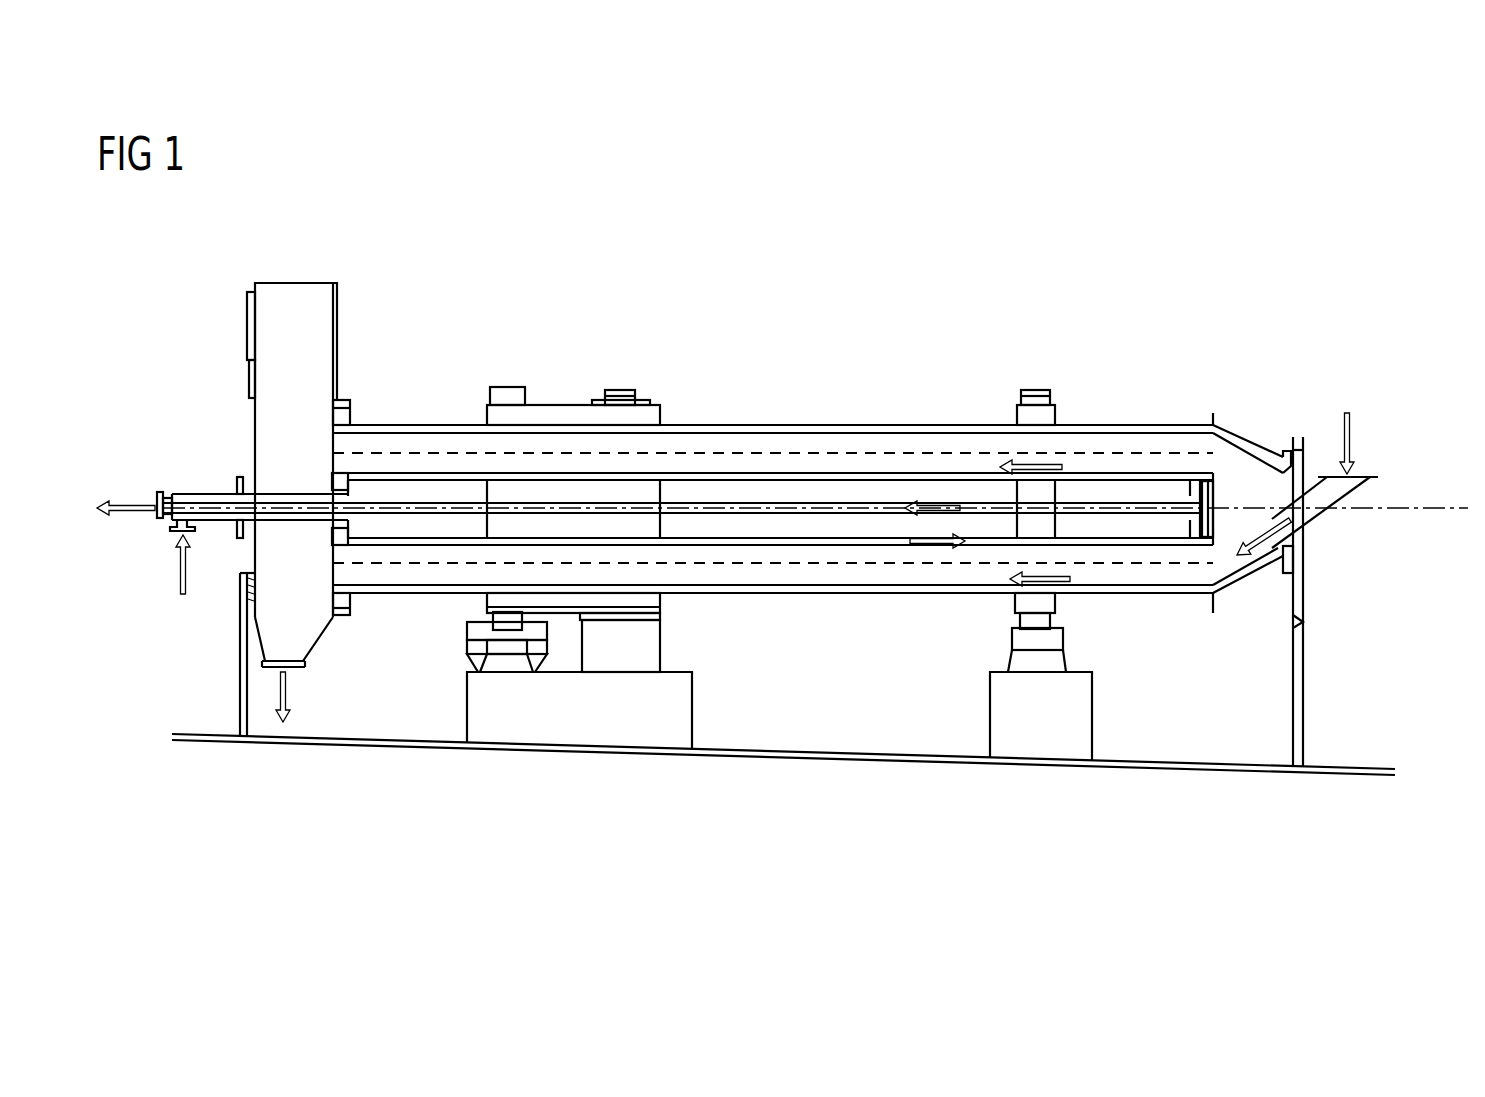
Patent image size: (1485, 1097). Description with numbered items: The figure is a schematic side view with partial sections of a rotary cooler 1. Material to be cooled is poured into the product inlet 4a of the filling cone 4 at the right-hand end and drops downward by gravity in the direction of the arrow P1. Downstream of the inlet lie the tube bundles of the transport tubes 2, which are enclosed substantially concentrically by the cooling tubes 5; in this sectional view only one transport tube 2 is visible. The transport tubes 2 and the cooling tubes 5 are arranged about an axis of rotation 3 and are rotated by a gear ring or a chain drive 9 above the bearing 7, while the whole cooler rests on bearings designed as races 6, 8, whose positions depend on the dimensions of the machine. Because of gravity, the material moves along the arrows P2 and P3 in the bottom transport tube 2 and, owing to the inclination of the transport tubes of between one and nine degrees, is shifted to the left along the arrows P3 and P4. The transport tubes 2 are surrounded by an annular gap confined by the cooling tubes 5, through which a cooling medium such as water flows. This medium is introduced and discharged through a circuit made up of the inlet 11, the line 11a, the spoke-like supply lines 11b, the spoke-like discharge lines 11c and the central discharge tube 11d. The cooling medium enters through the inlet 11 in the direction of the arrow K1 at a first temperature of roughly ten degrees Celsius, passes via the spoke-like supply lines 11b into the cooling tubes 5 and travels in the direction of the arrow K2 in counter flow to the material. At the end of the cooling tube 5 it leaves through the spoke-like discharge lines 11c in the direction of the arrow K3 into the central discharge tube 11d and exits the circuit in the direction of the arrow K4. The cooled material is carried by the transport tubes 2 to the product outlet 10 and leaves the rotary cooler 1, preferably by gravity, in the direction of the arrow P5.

The rotary cooler 1 is at (898, 262).
The transport tubes 2 is at (845, 594).
The axis of rotation 3 is at (1448, 508).
The filling cone 4 is at (1255, 588).
The product inlet 4a is at (1328, 470).
The cooling tubes 5 is at (762, 597).
The race 6 is at (1055, 640).
The bearing 7 is at (655, 652).
The race 8 is at (467, 632).
The gear ring or chain drive 9 is at (622, 385).
The product outlet 10 is at (305, 660).
The inlet 11 is at (178, 528).
The cooling circuit line 11a is at (213, 521).
The spoke-like supply lines 11b is at (340, 478).
The spoke-like discharge lines 11c is at (1205, 495).
The central discharge tube 11d is at (166, 490).
The arrow K1 is at (183, 586).
The arrow K2 is at (930, 546).
The arrow K3 is at (935, 505).
The arrow K4 is at (133, 498).
The arrow P1 is at (1355, 425).
The arrow P2 is at (1295, 532).
The arrow P3 is at (1065, 580).
The arrow P4 is at (1050, 465).
The arrow P5 is at (285, 700).